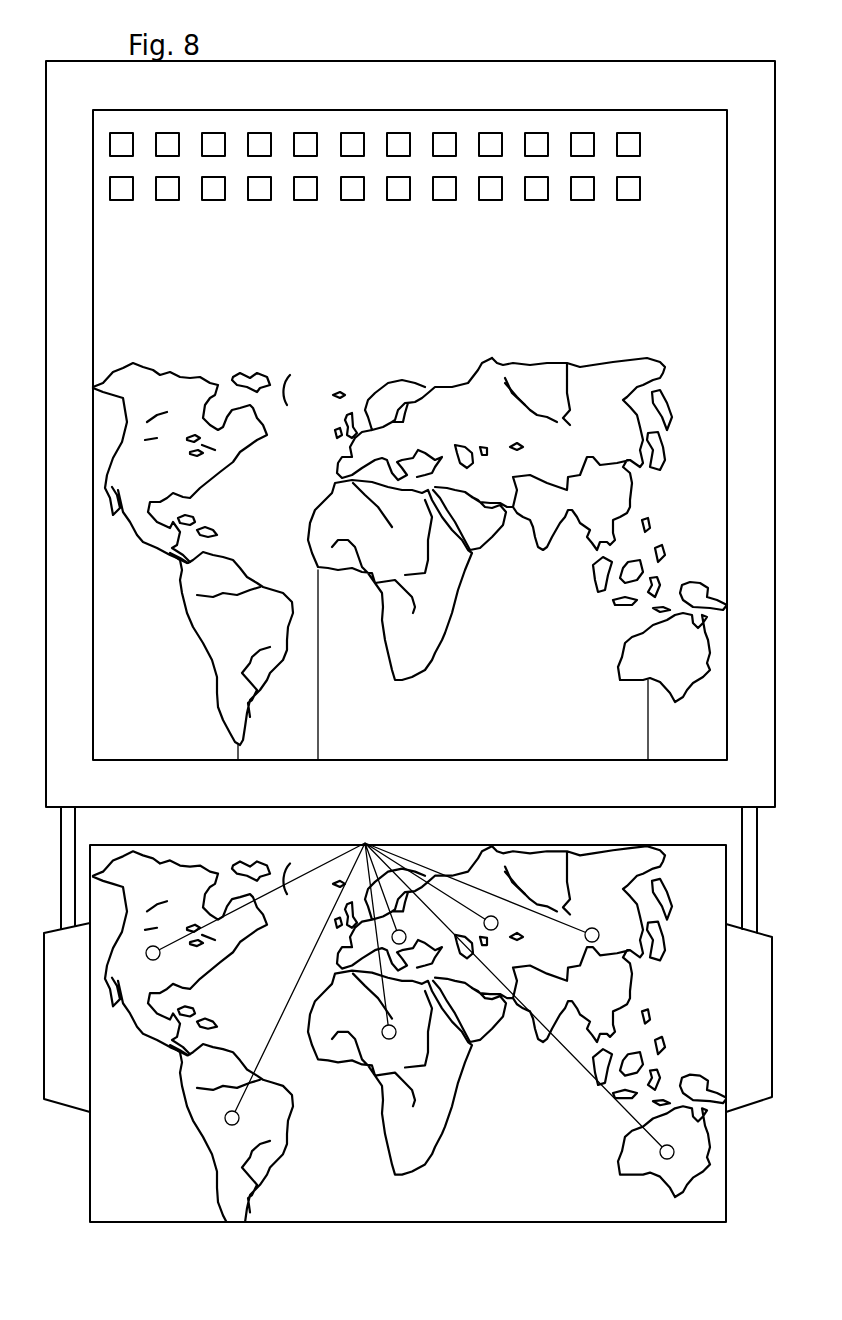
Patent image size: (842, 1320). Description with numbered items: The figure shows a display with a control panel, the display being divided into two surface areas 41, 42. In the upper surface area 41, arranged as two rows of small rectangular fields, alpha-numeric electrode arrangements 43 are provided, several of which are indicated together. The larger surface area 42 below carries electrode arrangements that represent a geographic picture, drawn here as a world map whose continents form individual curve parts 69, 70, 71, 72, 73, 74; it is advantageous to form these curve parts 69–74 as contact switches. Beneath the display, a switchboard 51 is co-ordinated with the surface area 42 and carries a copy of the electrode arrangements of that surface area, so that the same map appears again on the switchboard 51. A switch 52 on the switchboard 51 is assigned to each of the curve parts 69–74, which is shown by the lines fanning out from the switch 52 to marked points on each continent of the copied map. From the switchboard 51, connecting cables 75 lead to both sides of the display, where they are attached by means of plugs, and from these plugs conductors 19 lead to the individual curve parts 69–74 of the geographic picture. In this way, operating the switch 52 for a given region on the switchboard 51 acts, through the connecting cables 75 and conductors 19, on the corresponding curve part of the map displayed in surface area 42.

The conductors 19 is at (308, 735).
The surface area 41 is at (241, 168).
The surface area 42 is at (307, 437).
The alpha-numeric electrode arrangements 43 is at (490, 157).
The switchboard 51 is at (304, 853).
The switch 52 is at (410, 983).
The curve part 69 is at (140, 535).
The curve part 70 is at (216, 711).
The curve part 71 is at (421, 637).
The curve part 72 is at (428, 413).
The curve part 73 is at (507, 390).
The curve part 74 is at (617, 687).
The connecting cables 75 is at (76, 824).